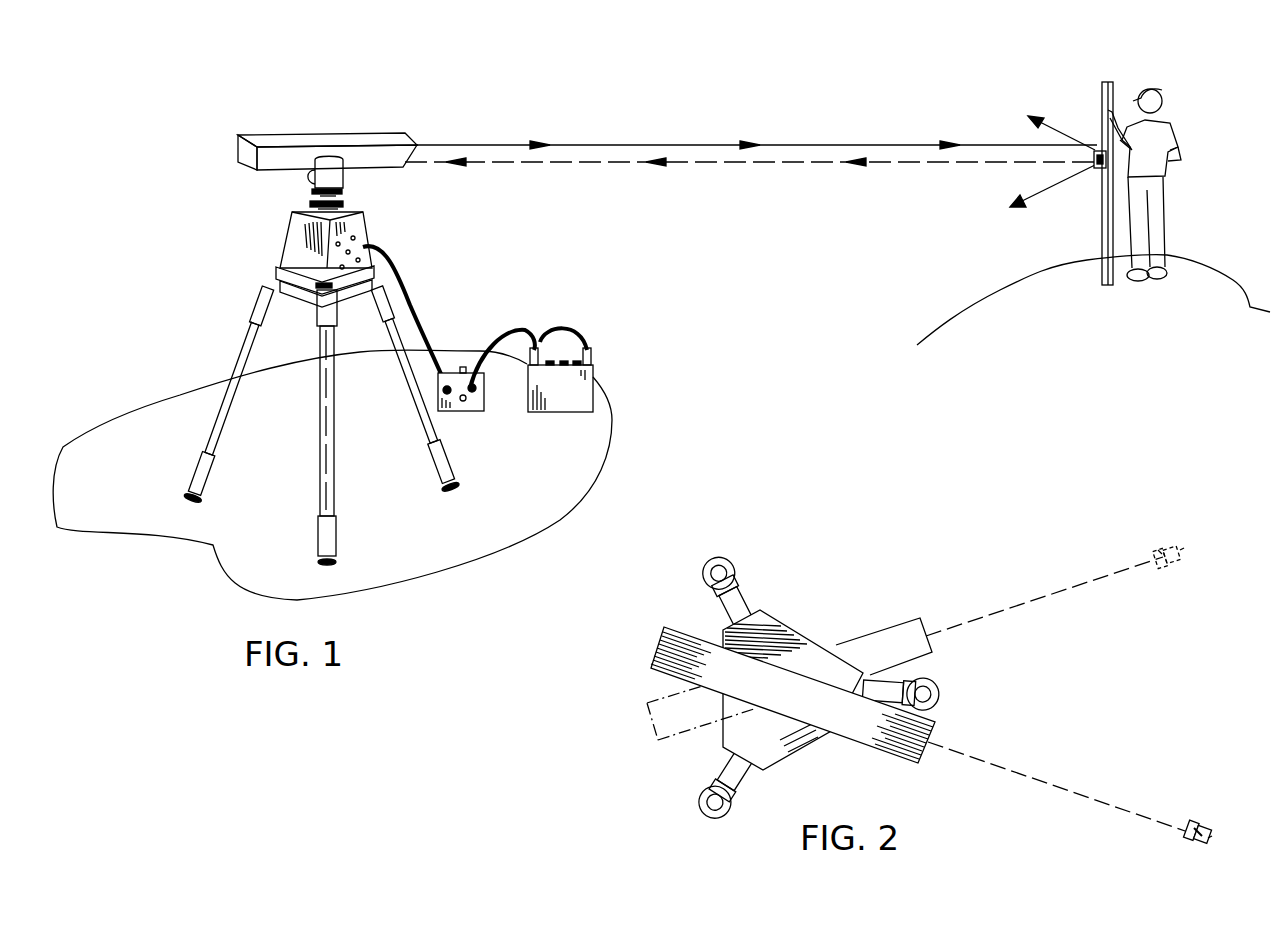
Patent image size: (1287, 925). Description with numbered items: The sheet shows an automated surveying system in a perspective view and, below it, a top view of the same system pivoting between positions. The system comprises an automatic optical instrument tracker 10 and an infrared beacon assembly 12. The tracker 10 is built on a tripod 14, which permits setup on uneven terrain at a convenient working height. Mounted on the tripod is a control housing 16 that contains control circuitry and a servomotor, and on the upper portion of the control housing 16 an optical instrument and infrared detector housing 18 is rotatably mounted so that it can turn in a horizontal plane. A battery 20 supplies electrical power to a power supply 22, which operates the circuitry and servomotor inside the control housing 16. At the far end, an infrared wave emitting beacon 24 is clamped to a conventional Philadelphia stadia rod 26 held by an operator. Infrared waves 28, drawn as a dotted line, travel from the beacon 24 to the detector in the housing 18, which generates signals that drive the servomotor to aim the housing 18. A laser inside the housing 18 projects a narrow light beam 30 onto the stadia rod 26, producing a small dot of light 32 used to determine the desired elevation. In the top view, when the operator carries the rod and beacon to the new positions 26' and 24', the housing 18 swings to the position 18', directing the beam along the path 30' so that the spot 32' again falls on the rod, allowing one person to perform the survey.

In FIG. 1, the automatic optical instrument tracker 10 is at (182, 158).
In FIG. 1, the infrared beacon assembly 12 is at (1078, 100).
In FIG. 1, the tripod 14 is at (378, 293).
In FIG. 2, the tripod 14 is at (738, 607).
In FIG. 1, the control housing 16 is at (358, 230).
In FIG. 1, the optical instrument and infrared detector housing 18 is at (327, 132).
In FIG. 2, the optical instrument and infrared detector housing 18 is at (776, 673).
In FIG. 2, the housing position 18' is at (789, 658).
In FIG. 1, the battery 20 is at (569, 387).
In FIG. 1, the power supply 22 is at (444, 384).
In FIG. 1, the infrared wave emitting beacon 24 is at (1077, 187).
In FIG. 2, the infrared wave emitting beacon 24 is at (1191, 849).
In FIG. 2, the beacon position 24' is at (1187, 572).
In FIG. 1, the Philadelphia stadia rod 26 is at (1125, 170).
In FIG. 2, the Philadelphia stadia rod 26 is at (1234, 823).
In FIG. 2, the stadia rod position 26' is at (1208, 535).
In FIG. 1, the infrared waves 28 is at (795, 163).
In FIG. 1, the light beam 30 is at (757, 130).
In FIG. 2, the light beam 30 is at (1058, 787).
In FIG. 2, the laser beam path 30' is at (1044, 596).
In FIG. 1, the dot of light 32 is at (1052, 148).
In FIG. 2, the dot of light 32 is at (1191, 811).
In FIG. 2, the light spot position 32' is at (1141, 539).